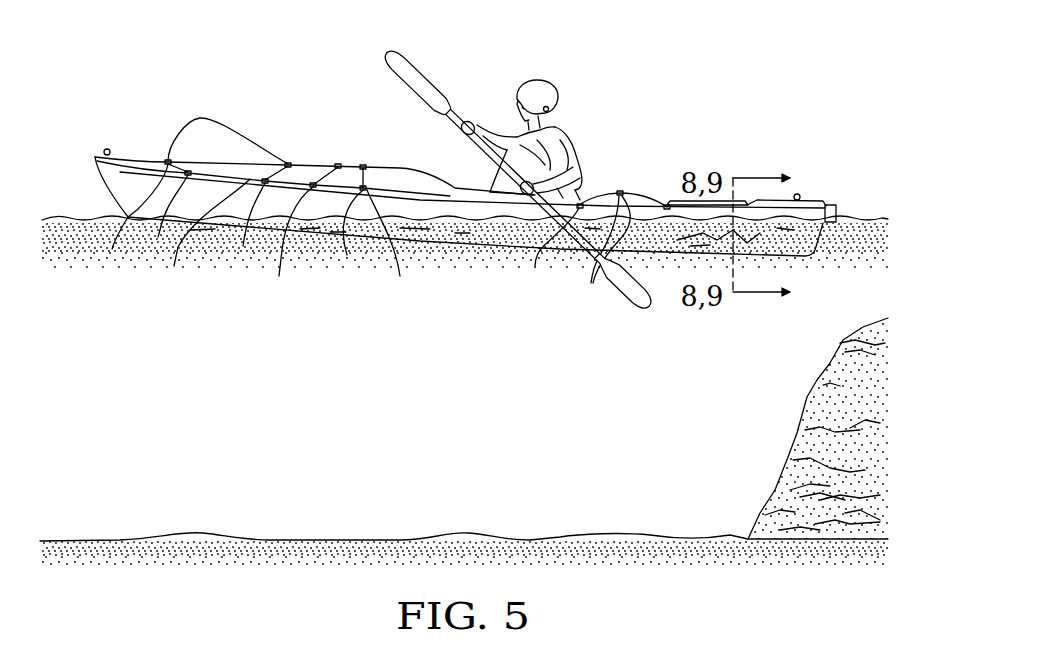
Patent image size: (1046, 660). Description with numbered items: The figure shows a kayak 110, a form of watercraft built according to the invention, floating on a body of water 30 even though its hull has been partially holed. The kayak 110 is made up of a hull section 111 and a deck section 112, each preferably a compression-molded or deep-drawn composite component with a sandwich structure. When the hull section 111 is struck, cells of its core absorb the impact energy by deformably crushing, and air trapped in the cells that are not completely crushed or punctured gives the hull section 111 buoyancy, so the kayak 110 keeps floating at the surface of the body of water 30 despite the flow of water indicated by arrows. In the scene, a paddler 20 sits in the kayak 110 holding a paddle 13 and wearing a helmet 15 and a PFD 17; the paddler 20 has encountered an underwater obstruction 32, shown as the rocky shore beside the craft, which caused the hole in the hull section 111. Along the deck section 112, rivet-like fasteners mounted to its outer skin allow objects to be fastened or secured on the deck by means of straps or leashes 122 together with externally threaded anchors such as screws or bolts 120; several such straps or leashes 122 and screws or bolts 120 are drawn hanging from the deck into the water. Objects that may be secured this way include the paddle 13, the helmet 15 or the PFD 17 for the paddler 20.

The kayak 110 is at (467, 166).
The hull section 111 is at (808, 257).
The deck section 112 is at (137, 158).
The paddle 13 is at (437, 90).
The helmet 15 is at (538, 80).
The PFD 17 is at (567, 140).
The paddler 20 is at (558, 125).
The body of water 30 is at (481, 314).
The underwater obstruction 32 is at (812, 386).
The screws or bolts 120 is at (200, 118).
The straps or leashes 122 is at (135, 180).